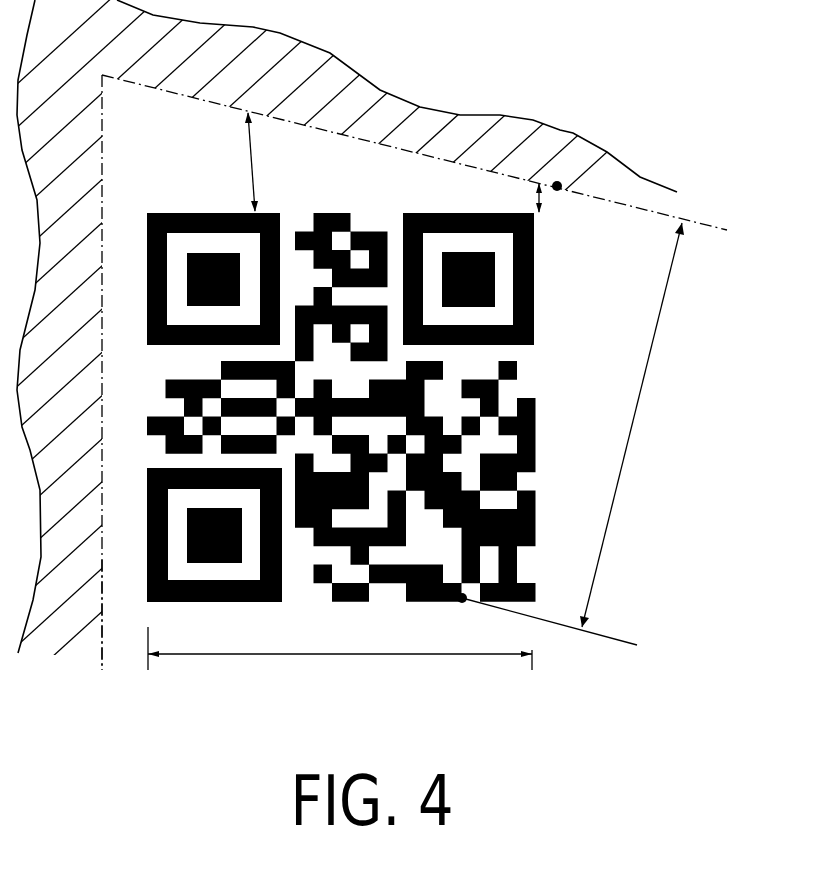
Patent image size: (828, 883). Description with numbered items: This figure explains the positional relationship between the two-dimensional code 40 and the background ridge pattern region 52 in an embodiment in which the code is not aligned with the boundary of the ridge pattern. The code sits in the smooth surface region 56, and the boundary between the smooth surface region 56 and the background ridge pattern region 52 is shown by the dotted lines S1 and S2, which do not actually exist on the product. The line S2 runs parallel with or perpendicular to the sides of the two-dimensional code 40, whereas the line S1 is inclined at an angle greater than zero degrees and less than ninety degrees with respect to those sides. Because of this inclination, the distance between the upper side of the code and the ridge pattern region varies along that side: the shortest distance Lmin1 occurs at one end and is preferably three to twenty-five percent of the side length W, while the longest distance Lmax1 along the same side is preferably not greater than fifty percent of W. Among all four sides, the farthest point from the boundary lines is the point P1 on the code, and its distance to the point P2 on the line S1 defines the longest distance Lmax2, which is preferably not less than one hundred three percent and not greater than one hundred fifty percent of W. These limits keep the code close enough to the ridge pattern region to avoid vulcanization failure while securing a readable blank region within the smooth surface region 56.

The two-dimensional code 40 is at (404, 199).
The background ridge pattern region 52 is at (341, 70).
The smooth surface region 56 is at (123, 552).
The line S1 is at (182, 97).
The line S2 is at (103, 183).
The point P1 is at (456, 602).
The point P2 is at (561, 181).
The longest distance Lmax1 is at (275, 162).
The longest distance Lmax2 is at (642, 425).
The shortest distance Lmin1 is at (578, 204).
The length W is at (340, 657).